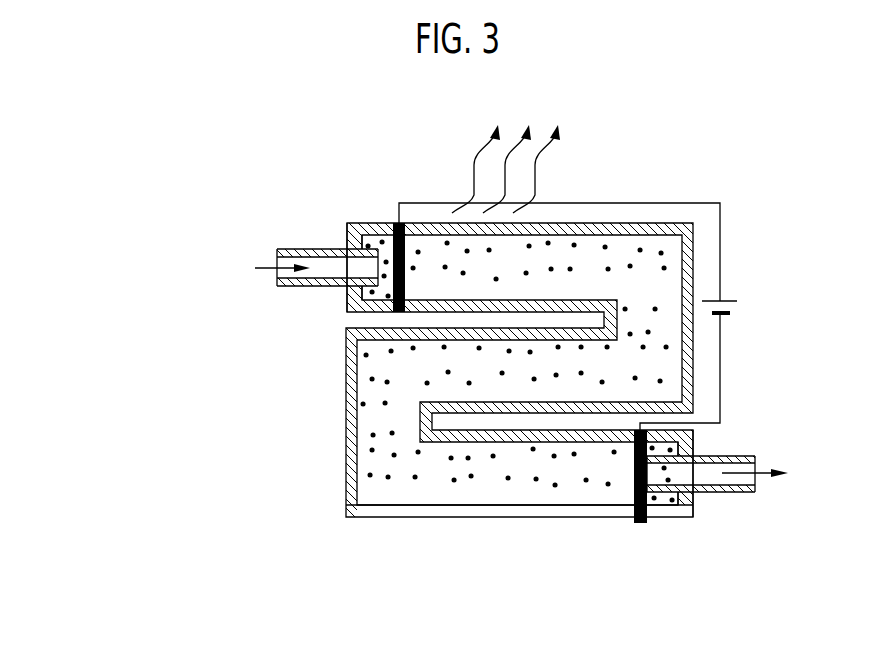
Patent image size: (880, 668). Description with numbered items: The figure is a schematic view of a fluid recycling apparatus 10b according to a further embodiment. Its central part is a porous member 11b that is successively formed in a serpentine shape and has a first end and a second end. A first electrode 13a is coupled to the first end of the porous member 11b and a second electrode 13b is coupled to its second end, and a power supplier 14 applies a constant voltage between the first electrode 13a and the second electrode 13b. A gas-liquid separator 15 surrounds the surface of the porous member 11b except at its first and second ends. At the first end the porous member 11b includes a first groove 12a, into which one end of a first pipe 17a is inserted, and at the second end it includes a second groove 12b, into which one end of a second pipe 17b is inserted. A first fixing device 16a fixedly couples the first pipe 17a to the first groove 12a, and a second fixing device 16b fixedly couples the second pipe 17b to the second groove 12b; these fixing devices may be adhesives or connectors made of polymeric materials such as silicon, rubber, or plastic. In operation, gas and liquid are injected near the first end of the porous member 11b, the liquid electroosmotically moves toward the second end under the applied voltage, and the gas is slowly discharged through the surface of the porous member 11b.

The fluid recycling apparatus 10b is at (297, 181).
The porous member 11b is at (455, 492).
The first groove 12a is at (360, 314).
The second groove 12b is at (672, 502).
The first electrode 13a is at (402, 224).
The second electrode 13b is at (640, 524).
The power supplier 14 is at (738, 305).
The gas-liquid separator 15 is at (516, 518).
The first fixing device 16a is at (357, 224).
The second fixing device 16b is at (690, 518).
The first pipe 17a is at (305, 287).
The second pipe 17b is at (740, 494).